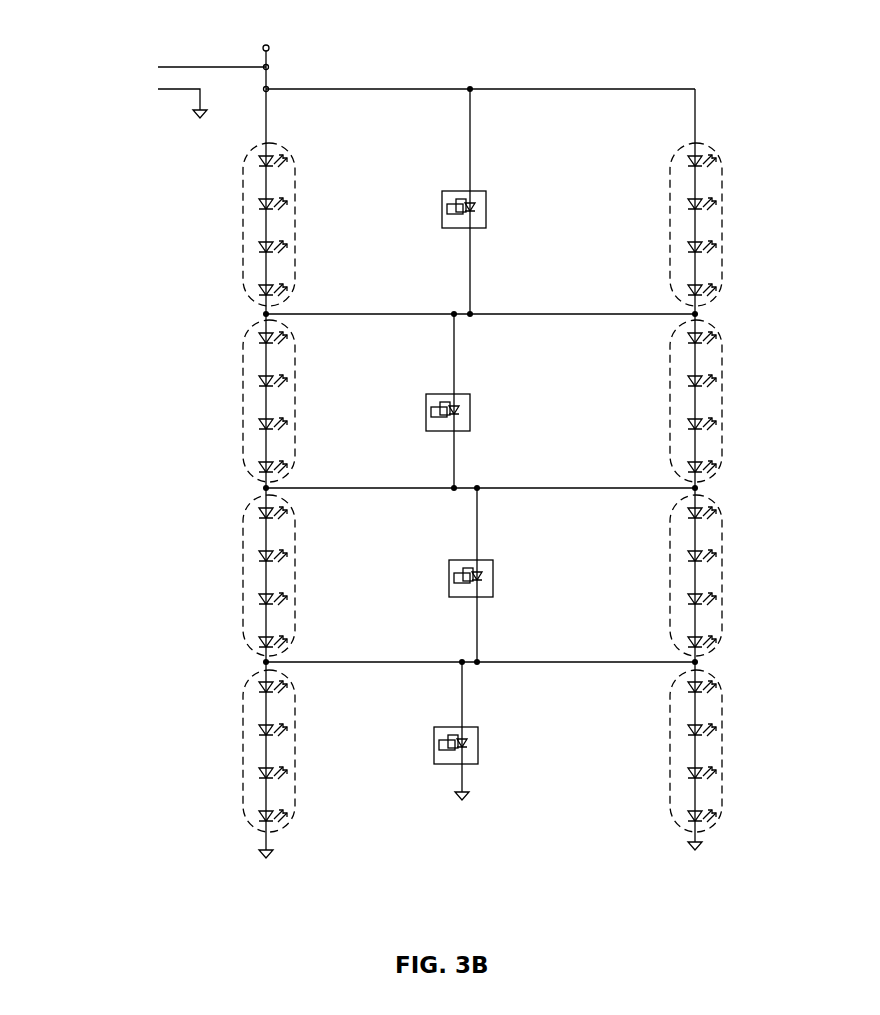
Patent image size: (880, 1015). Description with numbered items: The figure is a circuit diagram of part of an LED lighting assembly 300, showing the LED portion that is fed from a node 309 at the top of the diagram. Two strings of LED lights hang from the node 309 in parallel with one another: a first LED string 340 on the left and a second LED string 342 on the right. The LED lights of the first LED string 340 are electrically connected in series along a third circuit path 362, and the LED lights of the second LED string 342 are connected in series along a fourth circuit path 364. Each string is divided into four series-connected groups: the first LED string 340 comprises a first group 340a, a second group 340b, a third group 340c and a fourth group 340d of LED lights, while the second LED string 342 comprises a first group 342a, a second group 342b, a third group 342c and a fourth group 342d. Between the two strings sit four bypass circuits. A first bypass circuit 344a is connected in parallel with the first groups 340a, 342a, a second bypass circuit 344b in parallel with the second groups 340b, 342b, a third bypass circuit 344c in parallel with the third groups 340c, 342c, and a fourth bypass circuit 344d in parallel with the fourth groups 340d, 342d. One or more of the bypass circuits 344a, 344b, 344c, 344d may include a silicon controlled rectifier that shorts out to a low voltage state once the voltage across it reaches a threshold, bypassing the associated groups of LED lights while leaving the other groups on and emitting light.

The LED lighting assembly 300 is at (150, 282).
The node 309 is at (390, 88).
The first LED string 340 is at (186, 601).
The first group of LED lights 340a is at (243, 205).
The second group of LED lights 340b is at (243, 392).
The third group of LED lights 340c is at (243, 545).
The fourth group of LED lights 340d is at (243, 718).
The second LED string 342 is at (740, 455).
The first group of LED lights 342a is at (722, 215).
The second group of LED lights 342b is at (722, 393).
The third group of LED lights 342c is at (722, 568).
The fourth group of LED lights 342d is at (722, 740).
The first bypass circuit 344a is at (485, 210).
The second bypass circuit 344b is at (470, 412).
The third bypass circuit 344c is at (493, 578).
The fourth bypass circuit 344d is at (478, 745).
The third circuit path 362 is at (311, 103).
The fourth circuit path 364 is at (717, 122).